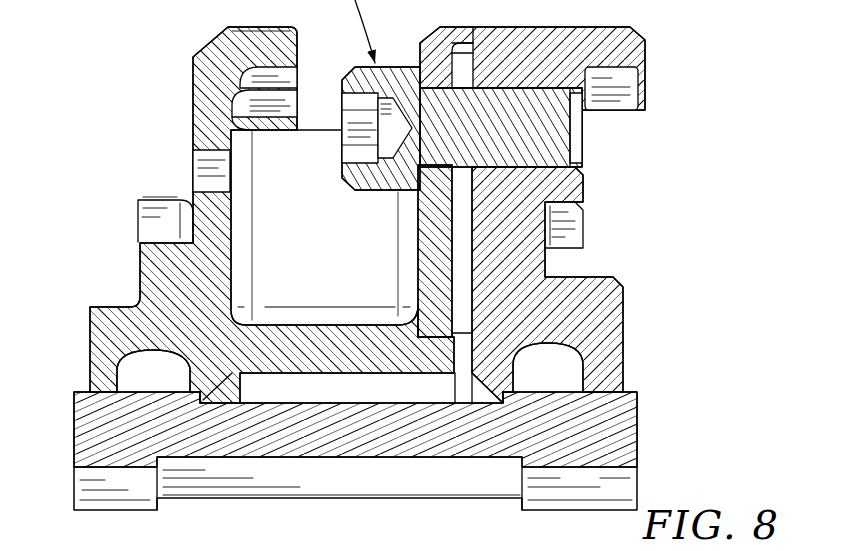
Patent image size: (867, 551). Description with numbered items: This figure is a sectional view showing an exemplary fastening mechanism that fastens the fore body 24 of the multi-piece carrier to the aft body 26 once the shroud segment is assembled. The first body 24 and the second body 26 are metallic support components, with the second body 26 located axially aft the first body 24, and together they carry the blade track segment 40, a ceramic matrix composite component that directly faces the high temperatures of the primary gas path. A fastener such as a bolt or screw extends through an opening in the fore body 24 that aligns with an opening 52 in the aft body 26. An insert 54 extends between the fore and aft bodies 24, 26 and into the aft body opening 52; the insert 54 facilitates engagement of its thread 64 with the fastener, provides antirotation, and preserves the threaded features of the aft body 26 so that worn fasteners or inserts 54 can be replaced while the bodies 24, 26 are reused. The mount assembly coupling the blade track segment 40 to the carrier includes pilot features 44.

The first body 24 is at (157, 137).
The second body 26 is at (677, 100).
The blade track segment 40 is at (650, 432).
The pilot features 44 is at (443, 80).
The opening 52 is at (585, 140).
The insert 54 is at (468, 229).
The thread 64 is at (577, 155).